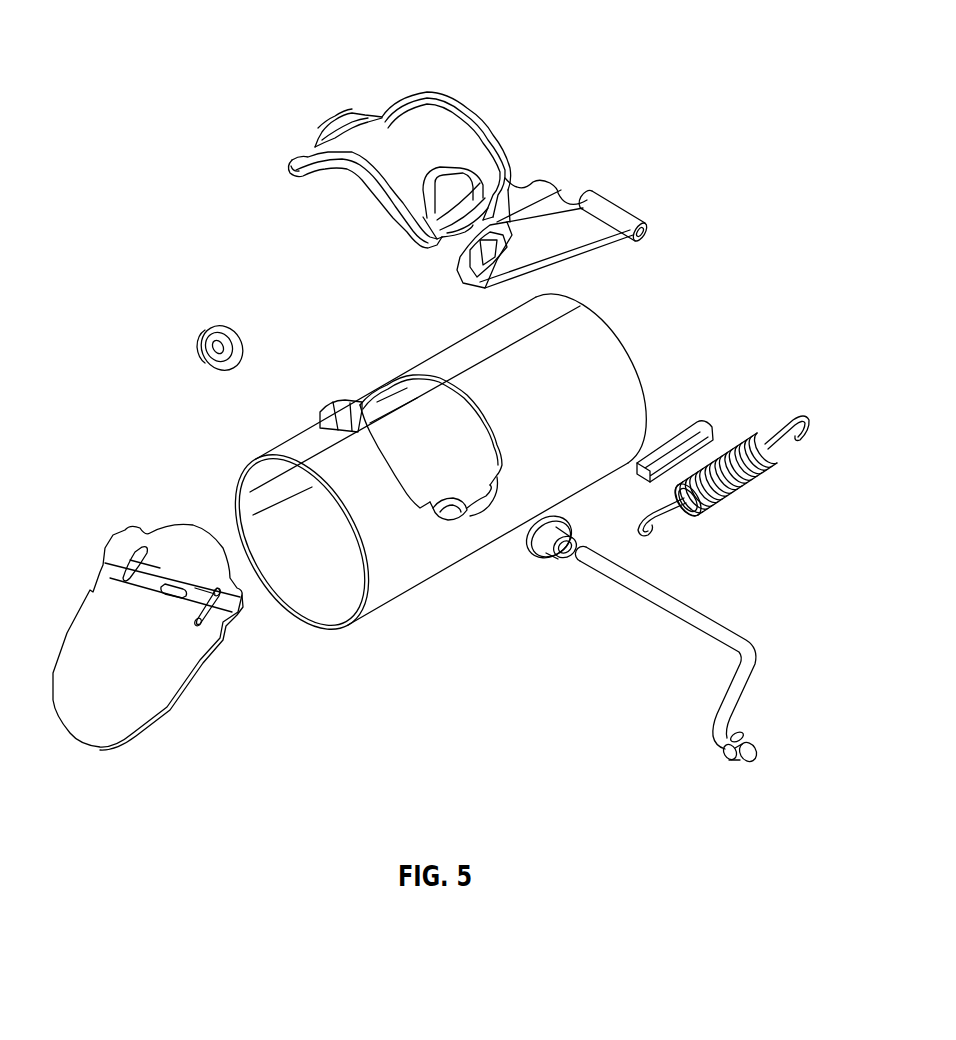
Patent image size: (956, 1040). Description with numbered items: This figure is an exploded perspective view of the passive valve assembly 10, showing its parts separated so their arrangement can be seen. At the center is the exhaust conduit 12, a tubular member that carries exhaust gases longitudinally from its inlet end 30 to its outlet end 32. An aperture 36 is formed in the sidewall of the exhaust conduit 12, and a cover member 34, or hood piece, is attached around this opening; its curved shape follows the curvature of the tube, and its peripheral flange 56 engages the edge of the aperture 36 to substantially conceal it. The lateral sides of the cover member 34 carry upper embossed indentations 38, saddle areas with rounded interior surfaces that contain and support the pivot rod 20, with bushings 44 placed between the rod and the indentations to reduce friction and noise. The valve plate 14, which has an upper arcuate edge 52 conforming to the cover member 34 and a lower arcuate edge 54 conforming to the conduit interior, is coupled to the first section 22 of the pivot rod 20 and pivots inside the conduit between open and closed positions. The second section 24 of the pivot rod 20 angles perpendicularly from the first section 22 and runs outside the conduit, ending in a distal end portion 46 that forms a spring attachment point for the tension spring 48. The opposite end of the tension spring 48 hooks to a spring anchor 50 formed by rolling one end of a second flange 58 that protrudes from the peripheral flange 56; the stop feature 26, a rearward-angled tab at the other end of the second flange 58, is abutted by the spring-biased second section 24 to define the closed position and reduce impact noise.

The passive valve assembly 10 is at (155, 105).
The exhaust conduit 12 is at (612, 364).
The valve plate 14 is at (95, 676).
The pivot rod 20 is at (667, 610).
The first section 22 is at (620, 593).
The second section 24 is at (766, 706).
The stop feature 26 is at (525, 268).
The inlet end 30 is at (652, 328).
The outlet end 32 is at (318, 598).
The cover member 34 is at (395, 158).
The aperture 36 is at (429, 398).
The upper embossed indentations 38 is at (362, 122).
The bushings 44 is at (200, 333).
The distal end portion 46 is at (746, 775).
The tension spring 48 is at (727, 487).
The spring anchor 50 is at (607, 213).
The upper arcuate edge 52 is at (183, 527).
The lower arcuate edge 54 is at (80, 742).
The peripheral flange 56 is at (456, 108).
The second flange 58 is at (543, 240).